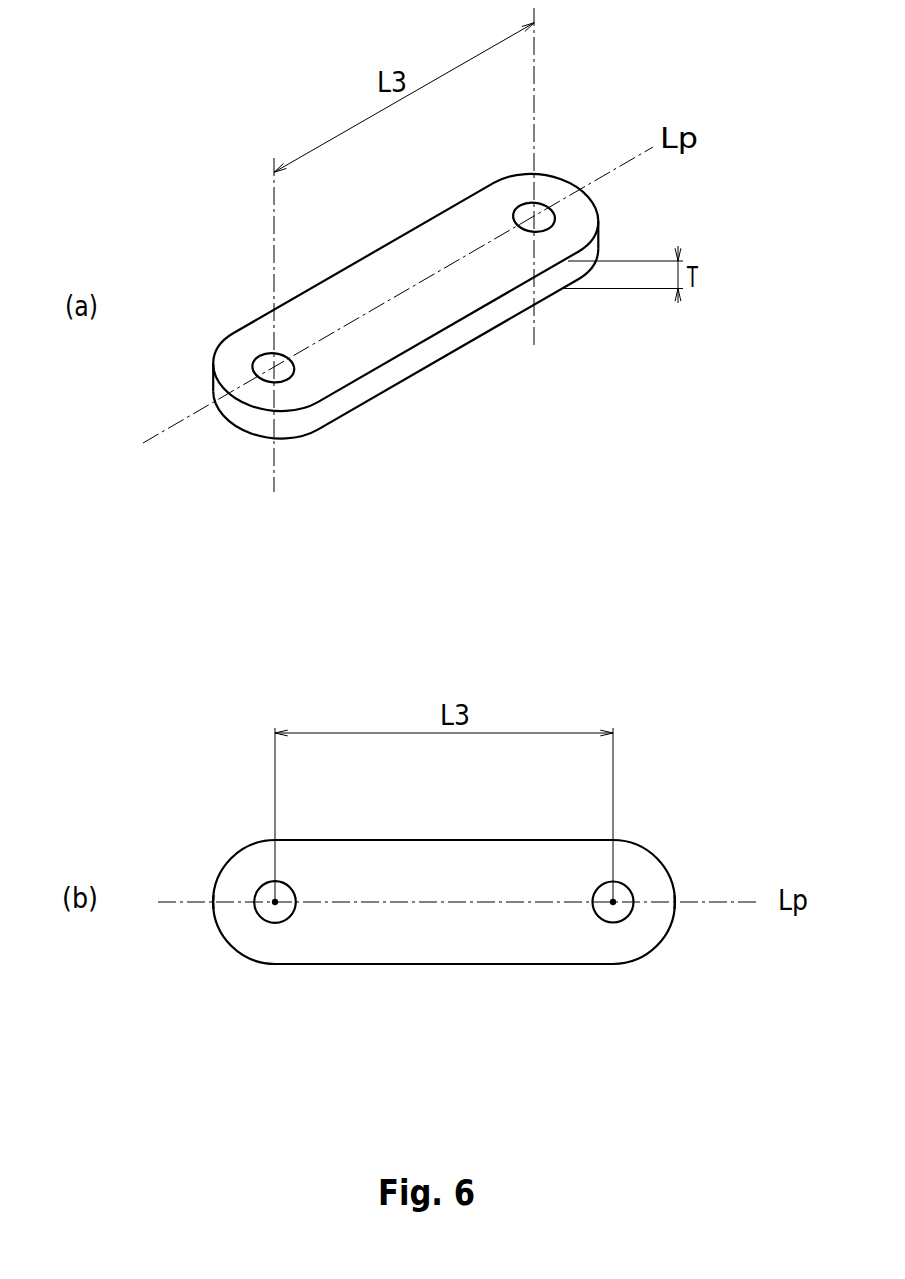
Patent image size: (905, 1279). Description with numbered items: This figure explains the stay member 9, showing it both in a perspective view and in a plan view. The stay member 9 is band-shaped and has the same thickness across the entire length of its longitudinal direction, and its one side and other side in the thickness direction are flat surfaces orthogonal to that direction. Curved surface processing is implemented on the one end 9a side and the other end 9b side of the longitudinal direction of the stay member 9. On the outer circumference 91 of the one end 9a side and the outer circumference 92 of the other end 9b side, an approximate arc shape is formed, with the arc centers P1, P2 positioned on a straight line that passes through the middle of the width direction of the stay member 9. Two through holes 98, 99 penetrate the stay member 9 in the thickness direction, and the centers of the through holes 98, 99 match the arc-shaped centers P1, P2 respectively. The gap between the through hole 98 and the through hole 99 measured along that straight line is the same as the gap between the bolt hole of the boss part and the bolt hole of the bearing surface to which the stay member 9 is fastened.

The stay member 9 is at (227, 447).
The outer circumference of the one end side 91 is at (227, 862).
The outer circumference of the other end side 92 is at (670, 872).
The one end 9a is at (210, 902).
The other end 9b is at (676, 903).
The through hole 98 is at (283, 378).
The through hole 99 is at (545, 226).
The center P1 is at (273, 904).
The center P2 is at (610, 903).